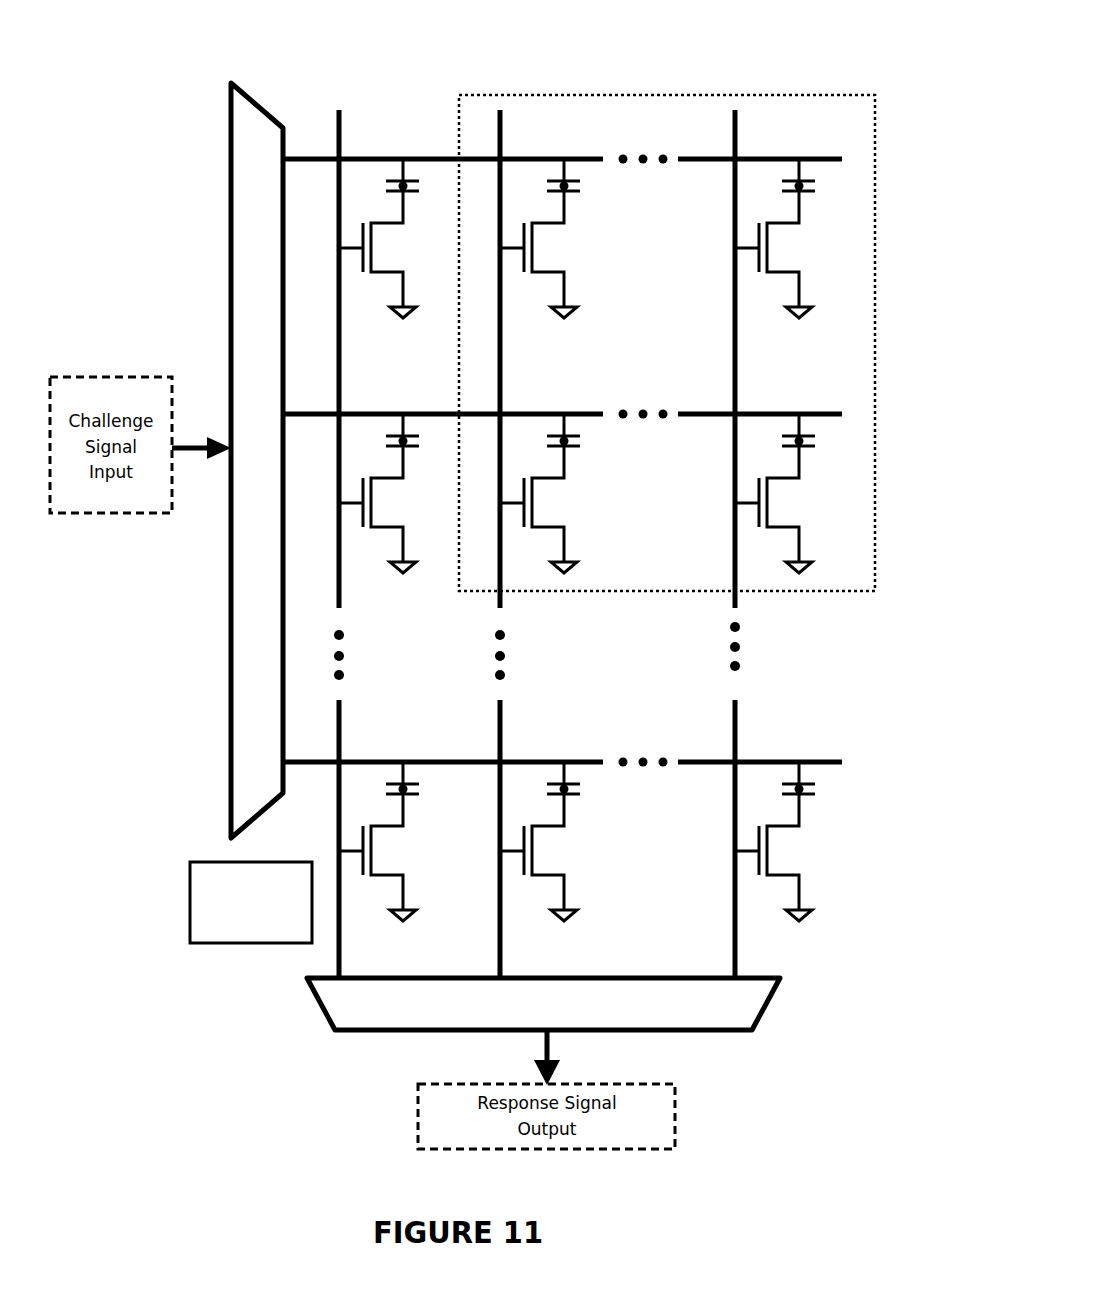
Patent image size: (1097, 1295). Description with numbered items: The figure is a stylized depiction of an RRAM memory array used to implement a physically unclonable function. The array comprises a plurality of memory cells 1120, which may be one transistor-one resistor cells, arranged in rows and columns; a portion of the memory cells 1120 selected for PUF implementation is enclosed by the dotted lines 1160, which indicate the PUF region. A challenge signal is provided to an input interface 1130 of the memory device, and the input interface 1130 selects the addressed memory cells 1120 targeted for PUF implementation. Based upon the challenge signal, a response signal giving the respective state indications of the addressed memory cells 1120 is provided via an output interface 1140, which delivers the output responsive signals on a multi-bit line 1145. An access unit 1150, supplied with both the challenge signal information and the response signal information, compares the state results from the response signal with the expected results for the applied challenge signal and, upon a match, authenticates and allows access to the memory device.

The memory cells 1120 is at (520, 188).
The input interface 1130 is at (230, 243).
The output interface 1140 is at (375, 1033).
The multi-bit line 1145 is at (552, 1052).
The access unit 1150 is at (252, 945).
The dotted lines 1160 is at (538, 93).